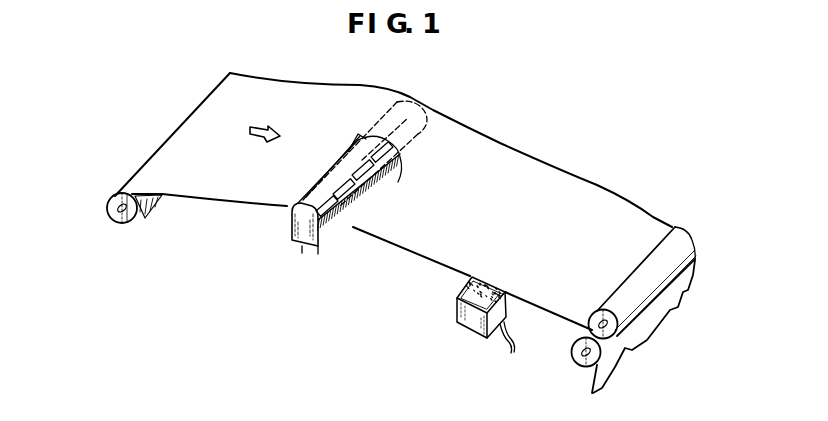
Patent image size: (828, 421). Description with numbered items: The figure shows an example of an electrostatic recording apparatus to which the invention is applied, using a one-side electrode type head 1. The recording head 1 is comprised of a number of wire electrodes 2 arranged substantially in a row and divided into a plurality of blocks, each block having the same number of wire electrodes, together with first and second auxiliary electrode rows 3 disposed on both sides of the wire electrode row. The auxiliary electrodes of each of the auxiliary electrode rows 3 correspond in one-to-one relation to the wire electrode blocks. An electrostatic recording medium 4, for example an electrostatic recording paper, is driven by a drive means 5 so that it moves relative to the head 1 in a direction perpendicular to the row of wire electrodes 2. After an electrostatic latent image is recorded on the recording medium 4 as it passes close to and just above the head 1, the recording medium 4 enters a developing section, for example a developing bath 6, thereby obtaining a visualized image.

The one-side electrode type head 1 is at (290, 219).
The wire electrodes 2 is at (306, 194).
The first and second auxiliary electrode rows 3 is at (335, 156).
The electrostatic recording medium 4 is at (305, 84).
The drive means 5 is at (130, 222).
The developing bath 6 is at (474, 328).